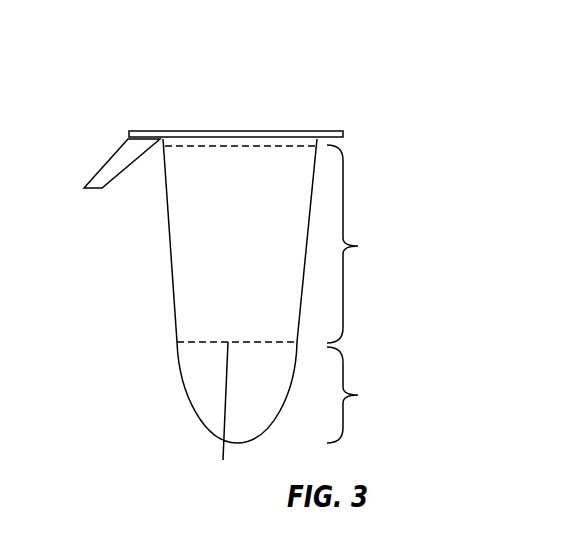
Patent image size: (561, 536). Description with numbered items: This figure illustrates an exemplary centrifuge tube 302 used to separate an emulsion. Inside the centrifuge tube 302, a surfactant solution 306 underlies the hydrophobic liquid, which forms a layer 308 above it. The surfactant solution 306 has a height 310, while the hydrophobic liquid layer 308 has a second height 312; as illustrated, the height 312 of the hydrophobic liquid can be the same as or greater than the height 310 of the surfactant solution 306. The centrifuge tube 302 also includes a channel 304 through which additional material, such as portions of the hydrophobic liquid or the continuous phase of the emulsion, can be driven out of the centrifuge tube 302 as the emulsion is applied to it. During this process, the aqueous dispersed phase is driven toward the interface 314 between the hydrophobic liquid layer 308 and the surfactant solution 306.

The centrifuge tube 302 is at (253, 130).
The channel 304 is at (118, 150).
The surfactant solution 306 is at (185, 395).
The hydrophobic liquid layer 308 is at (170, 277).
The height of the surfactant solution 310 is at (364, 395).
The height of the hydrophobic liquid layer 312 is at (364, 244).
The interface 314 is at (223, 460).